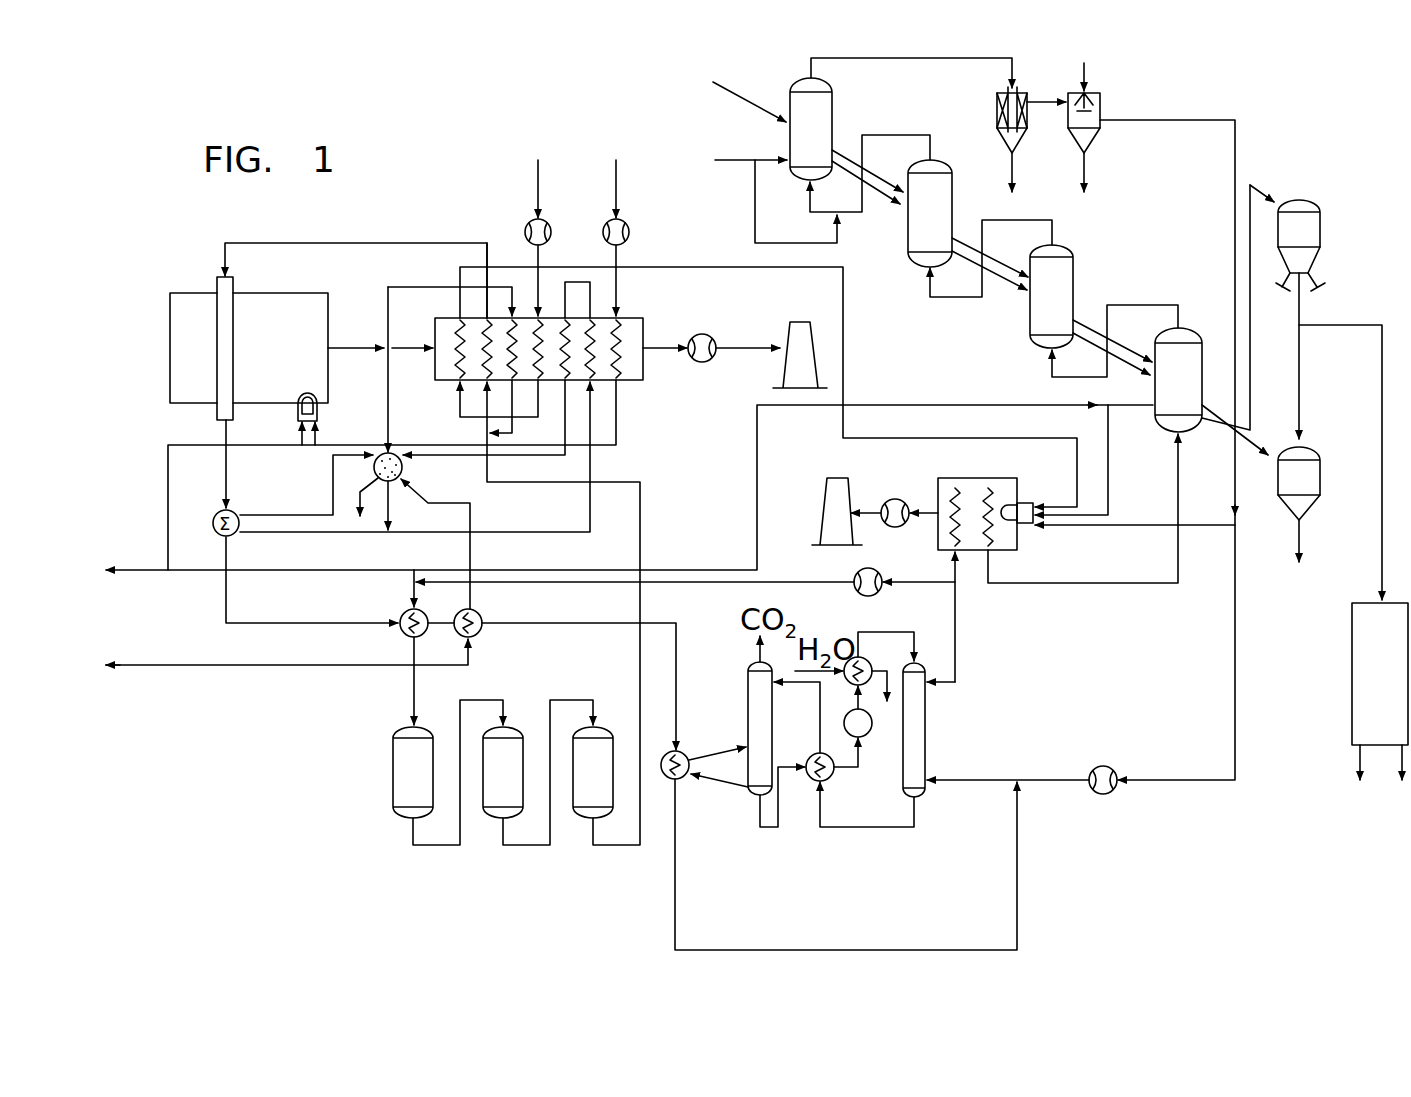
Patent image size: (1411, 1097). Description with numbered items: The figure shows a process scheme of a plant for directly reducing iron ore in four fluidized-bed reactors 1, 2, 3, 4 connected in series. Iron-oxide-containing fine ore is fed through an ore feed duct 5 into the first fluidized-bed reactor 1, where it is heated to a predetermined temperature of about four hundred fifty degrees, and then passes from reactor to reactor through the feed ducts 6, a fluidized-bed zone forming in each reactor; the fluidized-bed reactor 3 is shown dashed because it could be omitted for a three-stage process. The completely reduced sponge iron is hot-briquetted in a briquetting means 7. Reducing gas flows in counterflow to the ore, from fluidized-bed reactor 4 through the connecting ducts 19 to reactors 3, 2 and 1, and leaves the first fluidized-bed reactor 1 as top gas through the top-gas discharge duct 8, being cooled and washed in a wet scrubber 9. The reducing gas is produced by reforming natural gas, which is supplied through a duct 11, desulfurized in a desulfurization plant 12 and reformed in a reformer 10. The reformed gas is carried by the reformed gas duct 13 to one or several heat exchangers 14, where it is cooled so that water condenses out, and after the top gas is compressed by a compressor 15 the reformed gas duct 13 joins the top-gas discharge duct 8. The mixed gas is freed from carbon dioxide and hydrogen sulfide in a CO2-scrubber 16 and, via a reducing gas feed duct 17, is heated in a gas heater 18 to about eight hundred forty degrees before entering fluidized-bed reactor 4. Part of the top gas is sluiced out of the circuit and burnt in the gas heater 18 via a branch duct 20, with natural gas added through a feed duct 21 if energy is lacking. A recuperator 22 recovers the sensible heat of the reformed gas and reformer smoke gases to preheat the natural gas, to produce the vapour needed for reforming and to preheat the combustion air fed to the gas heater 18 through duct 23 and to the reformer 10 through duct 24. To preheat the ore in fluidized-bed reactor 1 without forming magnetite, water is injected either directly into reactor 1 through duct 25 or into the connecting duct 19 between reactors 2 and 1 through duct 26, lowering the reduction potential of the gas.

The first fluidized-bed reactor 1 is at (822, 145).
The fluidized-bed reactor 2 is at (941, 231).
The fluidized-bed reactor 3 is at (1064, 315).
The fluidized-bed reactor 4 is at (1190, 397).
The ore feed duct 5 is at (727, 91).
The feed ducts 6 is at (842, 156).
The briquetting means 7 is at (1348, 668).
The top-gas discharge duct 8 is at (907, 59).
The wet scrubber 9 is at (1068, 93).
The reformer 10 is at (302, 357).
The duct 11 is at (158, 565).
The desulfurization plant 12 is at (392, 826).
The reformed gas duct 13 is at (228, 460).
The heat exchangers 14 is at (232, 533).
The compressor 15 is at (1115, 768).
The CO2-scrubber 16 is at (926, 740).
The reducing gas feed duct 17 is at (1063, 583).
The gas heater 18 is at (971, 476).
The connecting ducts 19 is at (1050, 374).
The branch duct 20 is at (1208, 527).
The feed duct 21 is at (1108, 462).
The recuperator 22 is at (623, 380).
The duct 23 is at (537, 255).
The duct 24 is at (618, 260).
The duct 25 is at (730, 162).
The duct 26 is at (765, 243).